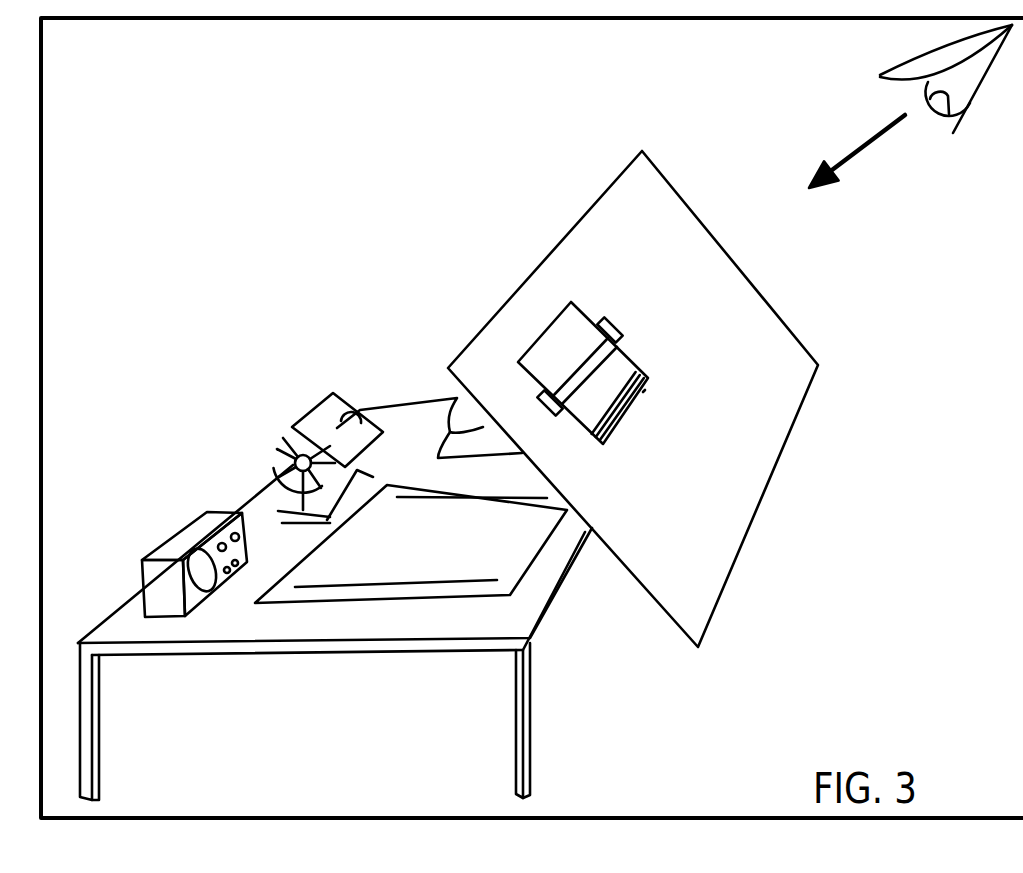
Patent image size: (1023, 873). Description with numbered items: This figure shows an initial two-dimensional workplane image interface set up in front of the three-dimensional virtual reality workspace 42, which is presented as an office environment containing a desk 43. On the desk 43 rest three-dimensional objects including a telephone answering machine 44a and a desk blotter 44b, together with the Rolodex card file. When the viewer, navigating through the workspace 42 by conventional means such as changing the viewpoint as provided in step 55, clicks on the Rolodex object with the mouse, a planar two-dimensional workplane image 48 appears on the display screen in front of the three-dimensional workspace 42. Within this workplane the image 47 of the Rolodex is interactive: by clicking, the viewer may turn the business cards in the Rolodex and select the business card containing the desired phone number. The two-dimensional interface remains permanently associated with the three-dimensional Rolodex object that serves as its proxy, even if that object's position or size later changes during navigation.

The workspace 42 is at (313, 667).
The desk 43 is at (205, 643).
The telephone answering machine 44a is at (175, 532).
The desk blotter 44b is at (522, 585).
The image of the Rolodex 47 is at (643, 392).
The planar two-dimensional workplane image 48 is at (760, 508).
The step 55 is at (547, 568).